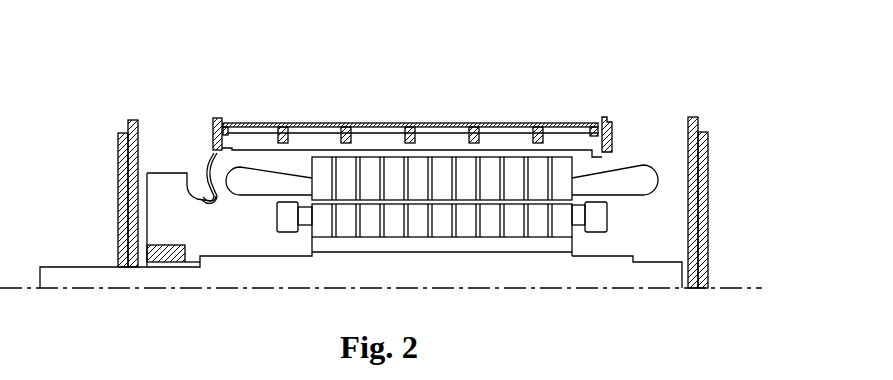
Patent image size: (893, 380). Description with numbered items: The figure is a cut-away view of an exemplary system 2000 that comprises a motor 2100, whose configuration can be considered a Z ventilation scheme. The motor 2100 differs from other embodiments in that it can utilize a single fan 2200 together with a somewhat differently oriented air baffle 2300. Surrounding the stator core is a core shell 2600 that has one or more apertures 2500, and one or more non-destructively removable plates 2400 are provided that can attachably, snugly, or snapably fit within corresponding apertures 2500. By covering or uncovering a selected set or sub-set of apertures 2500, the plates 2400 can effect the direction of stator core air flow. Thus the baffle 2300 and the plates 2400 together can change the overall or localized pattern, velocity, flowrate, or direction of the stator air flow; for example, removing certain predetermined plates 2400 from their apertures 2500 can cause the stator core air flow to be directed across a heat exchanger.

The system 2000 is at (381, 146).
The motor 2100 is at (427, 25).
The single fan 2200 is at (148, 206).
The air baffle 2300 is at (211, 151).
The non-destructively removable plate 2400 is at (394, 124).
The aperture 2500 is at (508, 127).
The core shell 2600 is at (412, 98).